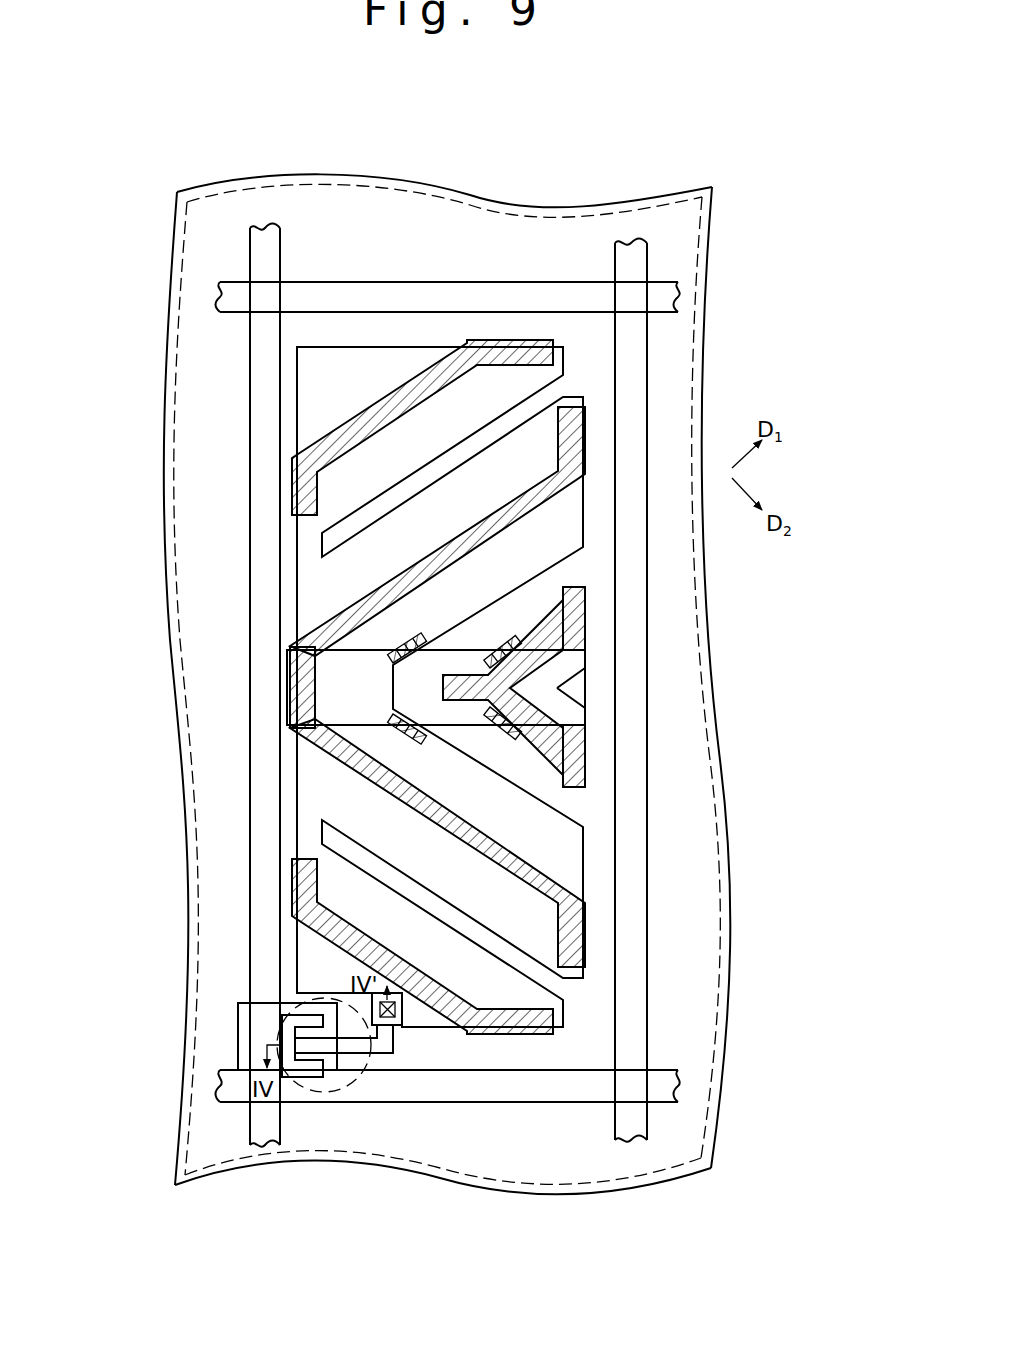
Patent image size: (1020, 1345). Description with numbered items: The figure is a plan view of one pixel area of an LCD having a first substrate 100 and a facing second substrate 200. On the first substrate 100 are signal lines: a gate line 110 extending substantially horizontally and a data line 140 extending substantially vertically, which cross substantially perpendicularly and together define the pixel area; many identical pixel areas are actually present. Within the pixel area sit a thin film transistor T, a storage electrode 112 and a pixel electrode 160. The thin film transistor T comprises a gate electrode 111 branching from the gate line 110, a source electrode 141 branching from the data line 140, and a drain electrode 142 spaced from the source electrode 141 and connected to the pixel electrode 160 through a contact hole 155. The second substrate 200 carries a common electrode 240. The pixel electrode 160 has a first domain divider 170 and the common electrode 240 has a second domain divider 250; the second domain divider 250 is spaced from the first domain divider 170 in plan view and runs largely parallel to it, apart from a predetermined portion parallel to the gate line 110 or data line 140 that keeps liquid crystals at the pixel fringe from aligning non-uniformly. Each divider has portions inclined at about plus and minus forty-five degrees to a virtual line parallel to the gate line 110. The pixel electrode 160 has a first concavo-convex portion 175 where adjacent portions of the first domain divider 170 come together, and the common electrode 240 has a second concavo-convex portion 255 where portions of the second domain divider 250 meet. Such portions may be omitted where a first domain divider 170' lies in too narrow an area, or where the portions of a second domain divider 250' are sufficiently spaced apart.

The first substrate 100 is at (518, 1195).
The second substrate 200 is at (711, 1168).
The common electrode 240 is at (618, 1182).
The data line 140 is at (265, 235).
The gate line 110 is at (680, 297).
The gate electrode 111 is at (243, 1033).
The storage electrode 112 is at (588, 657).
The first domain divider 170 is at (564, 687).
The first domain divider 170' is at (624, 687).
The second domain divider 250 is at (432, 687).
The second domain divider 250' is at (191, 687).
The pixel electrode 160 is at (556, 758).
The first concavo-convex portion 175 is at (398, 635).
The second concavo-convex portion 255 is at (506, 645).
The contact hole 155 is at (405, 1028).
The drain electrode 142 is at (370, 1055).
The source electrode 141 is at (300, 1080).
The thin film transistor T is at (330, 1098).